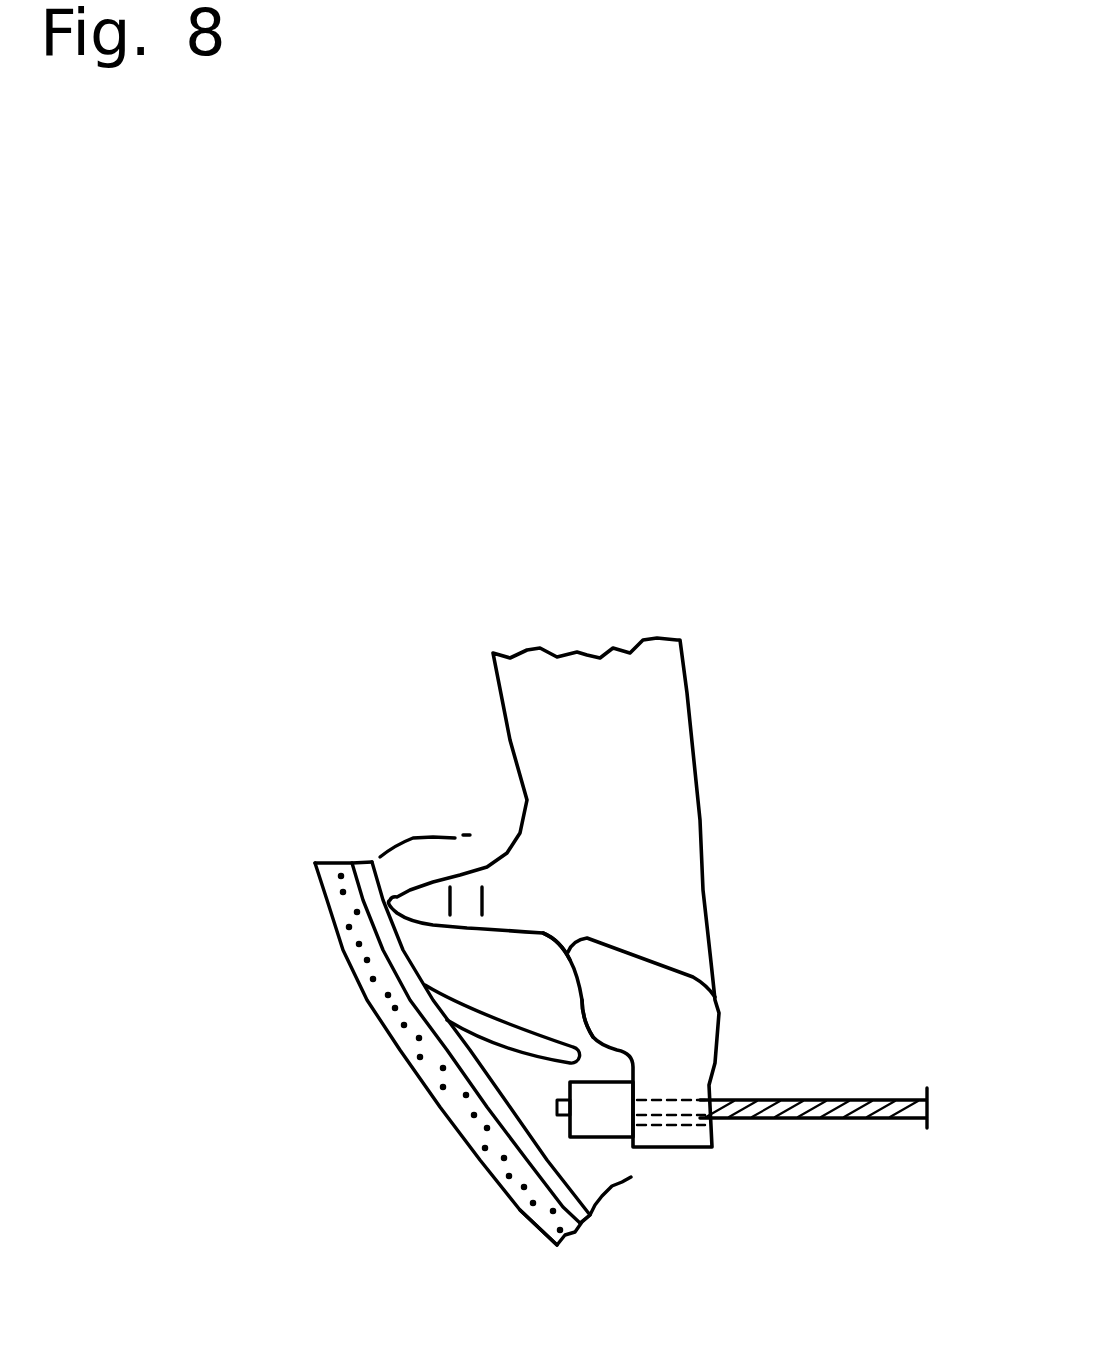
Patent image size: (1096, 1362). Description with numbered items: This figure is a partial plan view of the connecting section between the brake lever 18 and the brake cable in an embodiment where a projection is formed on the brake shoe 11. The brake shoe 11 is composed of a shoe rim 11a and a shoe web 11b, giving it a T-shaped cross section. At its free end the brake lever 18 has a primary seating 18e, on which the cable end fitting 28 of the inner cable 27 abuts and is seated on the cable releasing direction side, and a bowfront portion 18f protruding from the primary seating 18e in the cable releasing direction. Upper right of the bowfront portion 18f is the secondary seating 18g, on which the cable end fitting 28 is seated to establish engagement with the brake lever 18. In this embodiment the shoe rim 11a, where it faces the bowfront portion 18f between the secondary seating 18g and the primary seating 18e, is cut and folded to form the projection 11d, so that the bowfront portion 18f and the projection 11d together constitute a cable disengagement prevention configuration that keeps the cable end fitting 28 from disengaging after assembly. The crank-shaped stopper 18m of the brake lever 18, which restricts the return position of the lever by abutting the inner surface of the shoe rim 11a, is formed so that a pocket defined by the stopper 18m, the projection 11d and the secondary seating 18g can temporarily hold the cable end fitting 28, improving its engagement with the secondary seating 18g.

The brake shoe 11 is at (408, 1020).
The shoe rim 11a is at (397, 945).
The shoe web 11b is at (460, 960).
The projection 11d is at (473, 1043).
The brake lever 18 is at (587, 655).
The stopper 18m is at (410, 900).
The secondary seating 18g is at (580, 997).
The bowfront portion 18f is at (620, 1030).
The primary seating 18e is at (633, 1113).
The inner cable 27 is at (840, 1100).
The cable end fitting 28 is at (523, 1212).